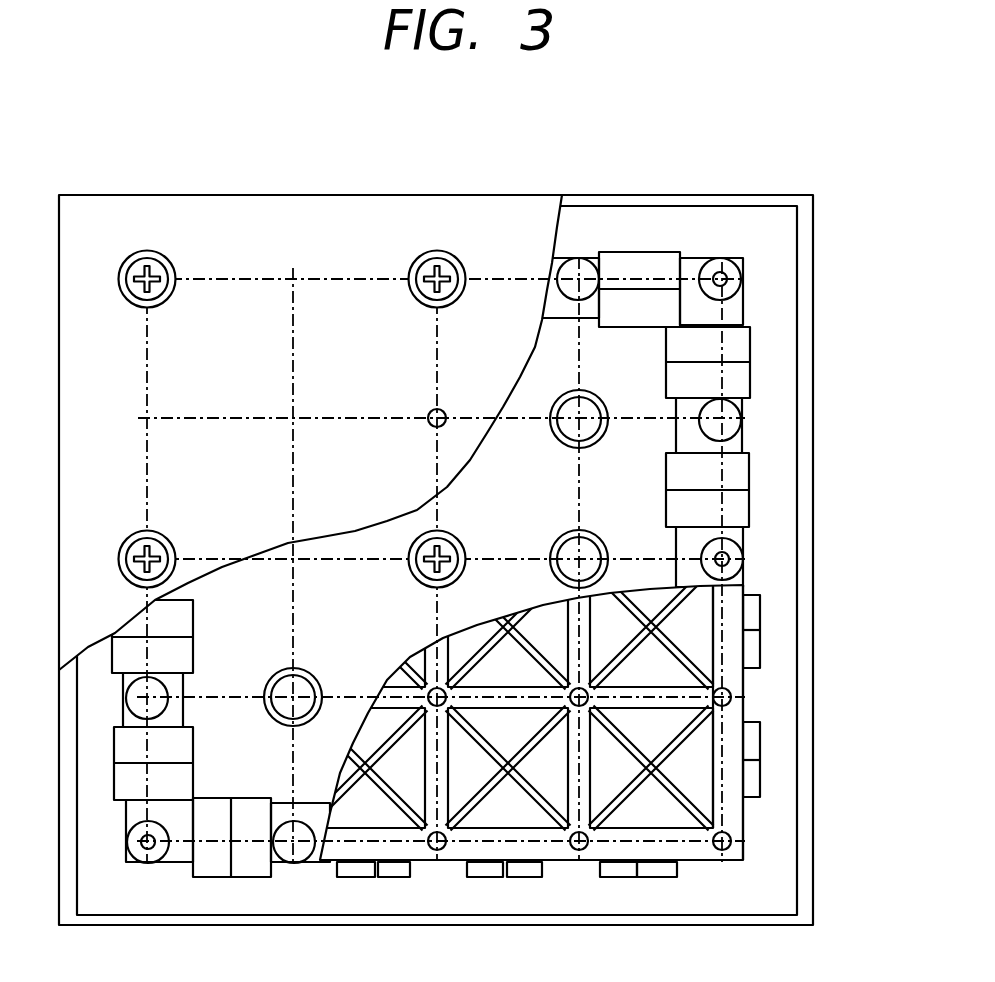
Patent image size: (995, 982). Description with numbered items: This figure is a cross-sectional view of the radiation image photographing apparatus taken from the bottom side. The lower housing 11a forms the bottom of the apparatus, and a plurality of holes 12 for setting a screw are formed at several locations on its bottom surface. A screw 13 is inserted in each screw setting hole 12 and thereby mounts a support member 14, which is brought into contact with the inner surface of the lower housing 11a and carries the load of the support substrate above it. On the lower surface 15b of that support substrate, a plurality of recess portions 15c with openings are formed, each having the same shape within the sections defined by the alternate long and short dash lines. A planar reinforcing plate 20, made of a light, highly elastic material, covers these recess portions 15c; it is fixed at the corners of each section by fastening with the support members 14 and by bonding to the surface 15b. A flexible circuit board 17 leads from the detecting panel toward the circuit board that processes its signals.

The lower housing 11a is at (355, 247).
The hole for setting a screw 12 is at (466, 268).
The screw 13 is at (450, 252).
The support member 14 is at (732, 427).
The flexible circuit board 17 is at (735, 473).
The reinforcing plate 20 is at (767, 556).
The lower surface of the support substrate 15b is at (730, 673).
The recess portion 15c is at (693, 773).